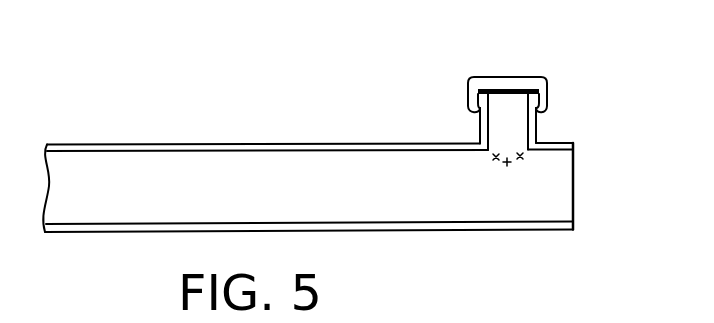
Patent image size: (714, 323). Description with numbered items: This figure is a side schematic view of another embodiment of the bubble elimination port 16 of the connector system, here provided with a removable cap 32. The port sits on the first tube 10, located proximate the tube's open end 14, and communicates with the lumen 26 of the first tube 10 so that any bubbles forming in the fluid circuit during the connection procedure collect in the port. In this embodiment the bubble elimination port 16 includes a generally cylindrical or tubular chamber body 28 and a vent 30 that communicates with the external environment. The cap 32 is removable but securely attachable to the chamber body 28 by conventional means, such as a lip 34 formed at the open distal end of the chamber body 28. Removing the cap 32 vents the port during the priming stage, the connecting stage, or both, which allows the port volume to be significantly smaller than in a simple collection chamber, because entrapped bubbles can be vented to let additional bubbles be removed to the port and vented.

The first tube 10 is at (325, 143).
The open end 14 is at (576, 189).
The bubble elimination port 16 is at (562, 56).
The lumen 26 is at (492, 190).
The chamber body 28 is at (480, 129).
The vent 30 is at (513, 100).
The cap 32 is at (490, 77).
The lip 34 is at (540, 92).